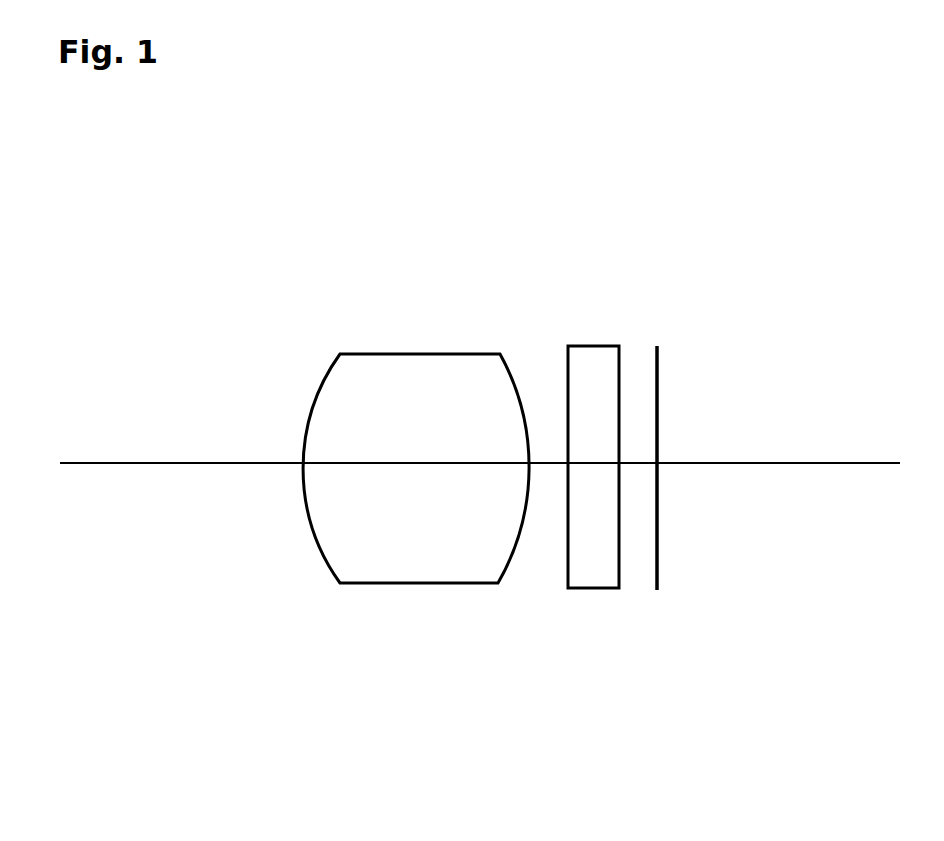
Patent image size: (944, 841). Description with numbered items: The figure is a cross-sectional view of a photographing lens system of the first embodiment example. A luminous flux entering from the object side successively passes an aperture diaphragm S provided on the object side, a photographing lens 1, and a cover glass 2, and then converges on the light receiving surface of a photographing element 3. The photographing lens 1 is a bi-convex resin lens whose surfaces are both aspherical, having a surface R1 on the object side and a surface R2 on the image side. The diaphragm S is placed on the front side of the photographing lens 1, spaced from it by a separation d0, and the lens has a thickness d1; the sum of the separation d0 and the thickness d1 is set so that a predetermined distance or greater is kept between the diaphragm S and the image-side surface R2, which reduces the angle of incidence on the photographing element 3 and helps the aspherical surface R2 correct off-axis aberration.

The photographing lens 1 is at (409, 398).
The cover glass 2 is at (588, 397).
The photographing element 3 is at (664, 403).
The aperture diaphragm S is at (209, 428).
The separation between the aperture diaphragm and the photographing lens d0 is at (272, 463).
The surface on the object side R1 is at (317, 540).
The thickness of the photographing lens d1 is at (391, 463).
The surface on the image side R2 is at (515, 547).